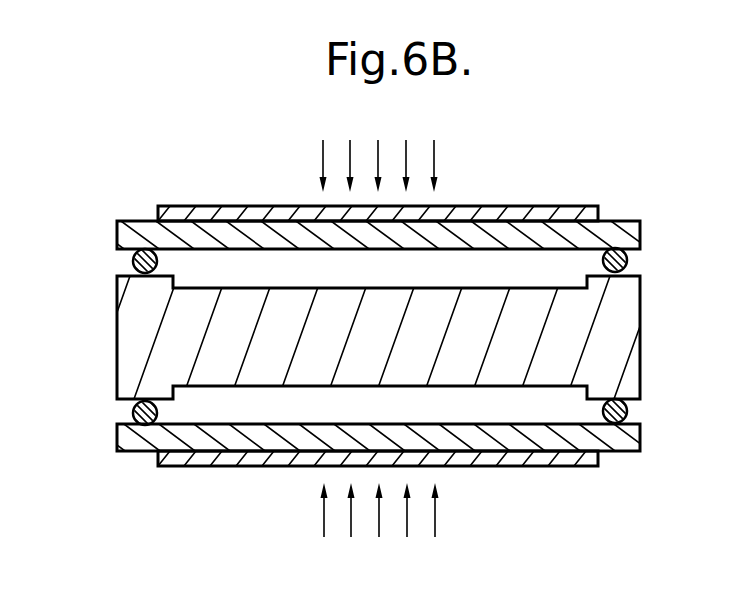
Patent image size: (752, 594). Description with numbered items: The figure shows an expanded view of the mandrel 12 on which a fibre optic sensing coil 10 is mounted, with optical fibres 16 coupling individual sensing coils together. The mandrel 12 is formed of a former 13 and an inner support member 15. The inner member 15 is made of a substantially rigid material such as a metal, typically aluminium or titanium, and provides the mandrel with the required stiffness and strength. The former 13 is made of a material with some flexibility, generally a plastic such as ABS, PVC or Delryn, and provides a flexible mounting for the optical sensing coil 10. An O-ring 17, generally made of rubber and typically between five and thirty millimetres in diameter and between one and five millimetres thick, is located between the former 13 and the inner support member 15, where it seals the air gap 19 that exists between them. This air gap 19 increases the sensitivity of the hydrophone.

The fibre optic sensing coil 10 is at (527, 205).
The mandrel 12 is at (652, 437).
The former 13 is at (642, 236).
The inner support member 15 is at (117, 323).
The optical fibre 16 is at (600, 211).
The O-ring 17 is at (132, 266).
The air gap 19 is at (196, 265).